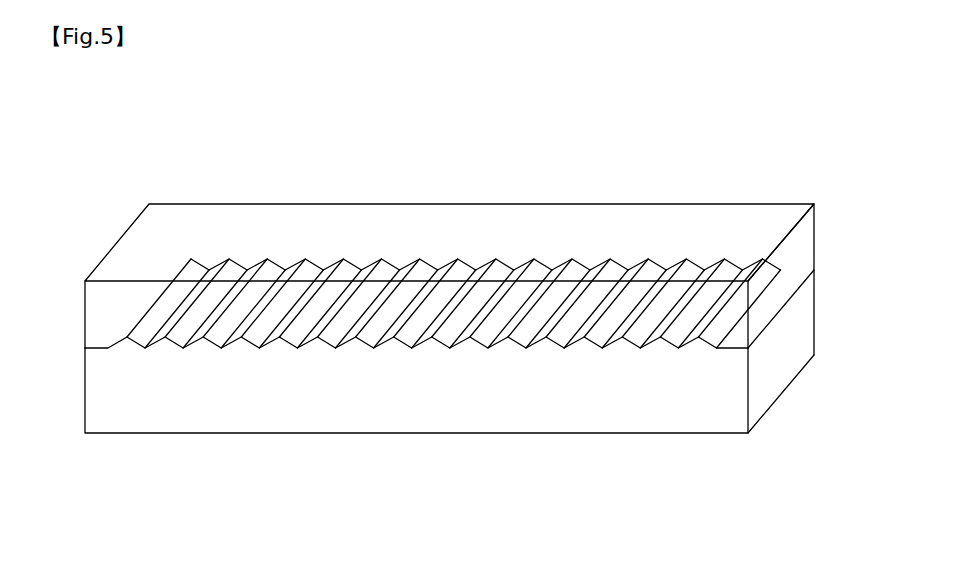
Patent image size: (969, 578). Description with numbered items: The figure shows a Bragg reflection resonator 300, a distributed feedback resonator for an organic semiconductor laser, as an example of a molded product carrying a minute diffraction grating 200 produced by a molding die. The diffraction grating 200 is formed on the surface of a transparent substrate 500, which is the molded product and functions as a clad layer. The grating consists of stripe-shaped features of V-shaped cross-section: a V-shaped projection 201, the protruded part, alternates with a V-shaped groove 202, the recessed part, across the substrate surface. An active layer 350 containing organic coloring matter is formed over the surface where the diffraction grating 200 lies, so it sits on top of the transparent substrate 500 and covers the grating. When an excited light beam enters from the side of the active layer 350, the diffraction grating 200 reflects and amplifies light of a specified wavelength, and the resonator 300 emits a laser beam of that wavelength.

The diffraction grating 200 is at (433, 402).
The V-shaped projection 201 is at (317, 340).
The V-shaped groove 202 is at (333, 349).
The Bragg reflection resonator 300 is at (490, 329).
The active layer 350 is at (835, 200).
The transparent substrate 500 is at (543, 410).